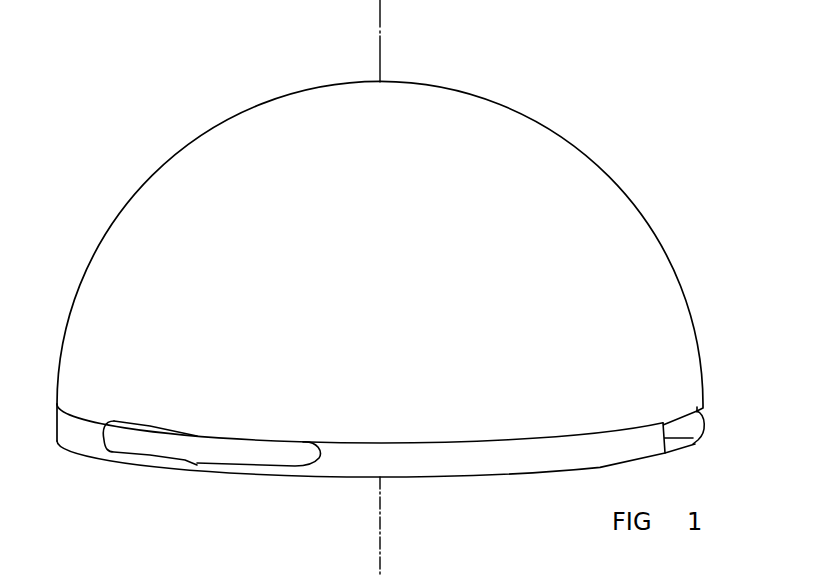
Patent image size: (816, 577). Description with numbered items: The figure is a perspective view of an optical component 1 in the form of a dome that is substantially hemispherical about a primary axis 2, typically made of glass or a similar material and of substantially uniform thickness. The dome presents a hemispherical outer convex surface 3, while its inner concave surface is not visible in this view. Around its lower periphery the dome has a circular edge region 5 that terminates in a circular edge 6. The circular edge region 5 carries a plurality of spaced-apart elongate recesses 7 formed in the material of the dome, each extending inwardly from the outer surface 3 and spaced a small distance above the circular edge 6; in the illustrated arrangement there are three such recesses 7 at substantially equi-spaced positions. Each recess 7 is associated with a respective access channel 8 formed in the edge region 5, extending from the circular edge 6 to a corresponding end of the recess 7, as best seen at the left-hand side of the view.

The optical component 1 is at (592, 114).
The primary axis 2 is at (380, 42).
The outer convex surface 3 is at (627, 271).
The circular edge region 5 is at (443, 458).
The circular edge 6 is at (500, 474).
The recess 7 is at (258, 452).
The access channel 8 is at (152, 453).